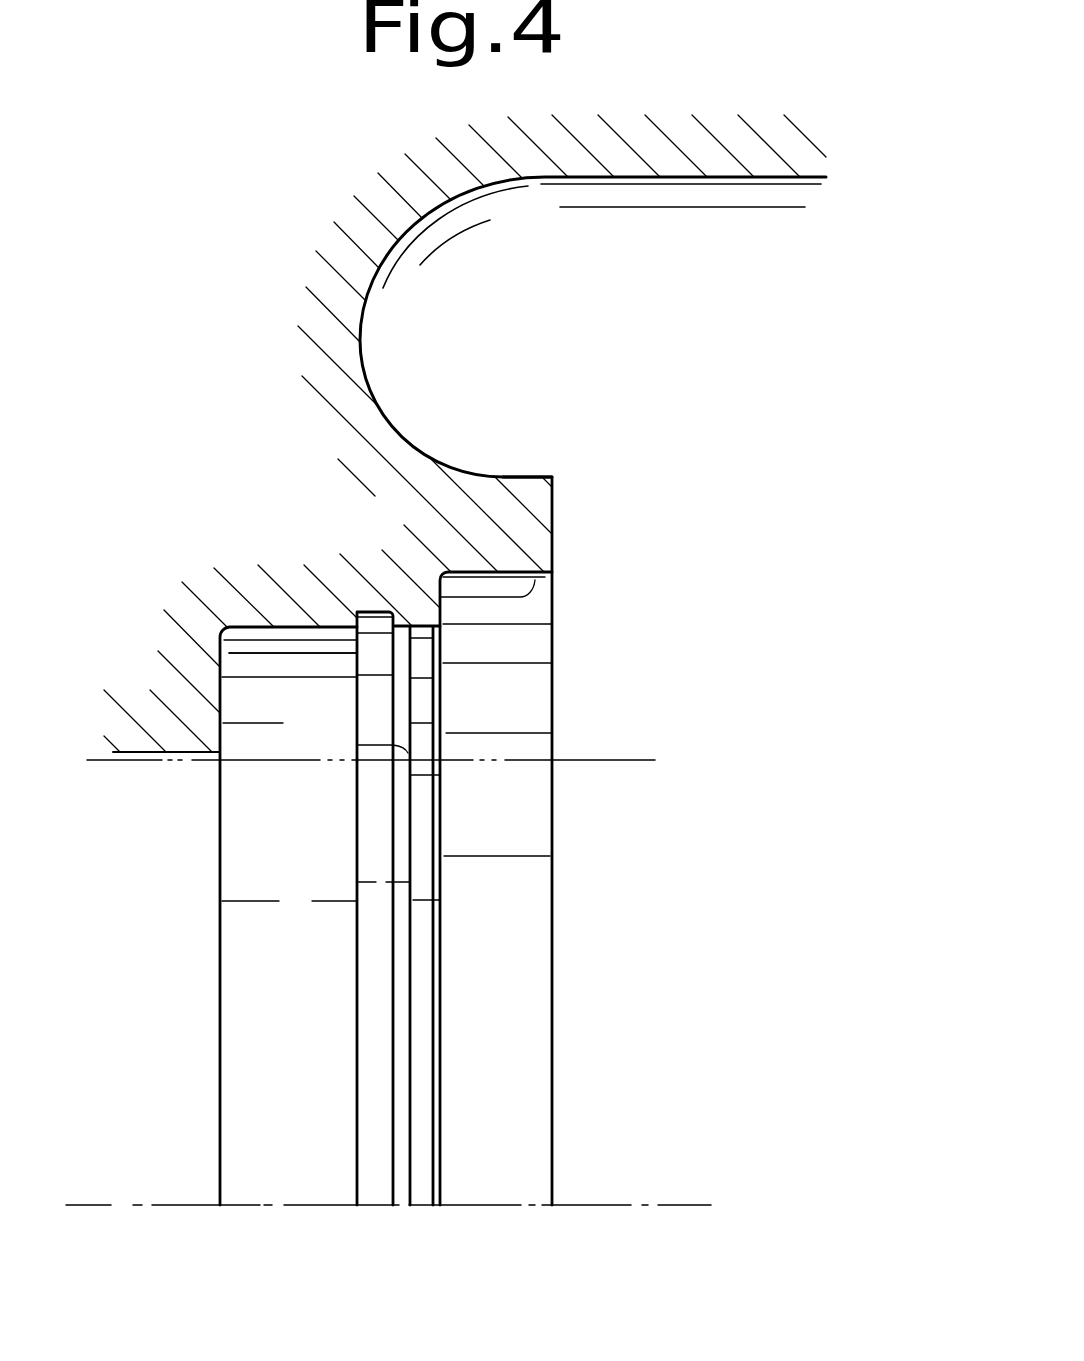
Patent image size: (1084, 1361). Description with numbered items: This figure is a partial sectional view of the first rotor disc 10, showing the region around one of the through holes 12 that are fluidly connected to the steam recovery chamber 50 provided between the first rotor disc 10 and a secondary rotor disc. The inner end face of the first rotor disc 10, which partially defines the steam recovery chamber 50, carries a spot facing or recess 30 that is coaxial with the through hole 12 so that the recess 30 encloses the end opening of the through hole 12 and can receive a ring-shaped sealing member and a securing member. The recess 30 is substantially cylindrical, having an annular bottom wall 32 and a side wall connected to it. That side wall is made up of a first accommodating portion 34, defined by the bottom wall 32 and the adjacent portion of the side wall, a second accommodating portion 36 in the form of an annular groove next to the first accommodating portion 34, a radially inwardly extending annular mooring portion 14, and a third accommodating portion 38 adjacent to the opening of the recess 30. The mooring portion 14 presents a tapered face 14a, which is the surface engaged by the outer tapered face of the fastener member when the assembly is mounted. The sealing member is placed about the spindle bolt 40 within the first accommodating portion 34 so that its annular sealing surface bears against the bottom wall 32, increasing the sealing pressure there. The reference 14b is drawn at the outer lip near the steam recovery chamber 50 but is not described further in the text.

The first rotor disc 10 is at (265, 337).
The through hole 12 is at (133, 750).
The mooring portion 14 is at (414, 603).
The tapered face of the mooring portion 14a is at (404, 620).
The outer sealing lip 14b is at (474, 582).
The recess 30 is at (460, 781).
The bottom wall 32 is at (222, 670).
The first accommodating portion 34 is at (296, 640).
The second accommodating portion 36 is at (363, 616).
The third accommodating portion 38 is at (510, 580).
The spindle bolt 40 is at (643, 760).
The steam recovery chamber 50 is at (621, 338).